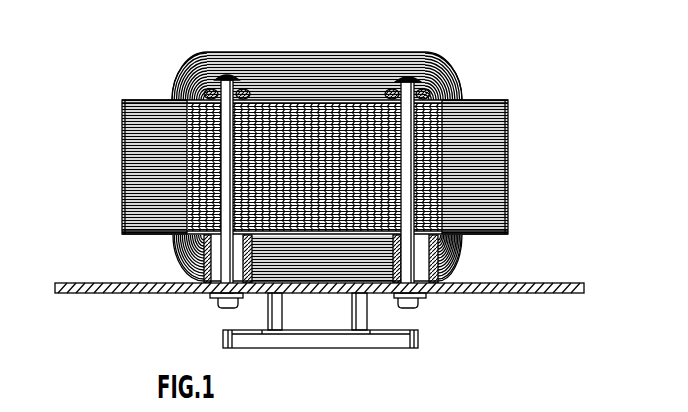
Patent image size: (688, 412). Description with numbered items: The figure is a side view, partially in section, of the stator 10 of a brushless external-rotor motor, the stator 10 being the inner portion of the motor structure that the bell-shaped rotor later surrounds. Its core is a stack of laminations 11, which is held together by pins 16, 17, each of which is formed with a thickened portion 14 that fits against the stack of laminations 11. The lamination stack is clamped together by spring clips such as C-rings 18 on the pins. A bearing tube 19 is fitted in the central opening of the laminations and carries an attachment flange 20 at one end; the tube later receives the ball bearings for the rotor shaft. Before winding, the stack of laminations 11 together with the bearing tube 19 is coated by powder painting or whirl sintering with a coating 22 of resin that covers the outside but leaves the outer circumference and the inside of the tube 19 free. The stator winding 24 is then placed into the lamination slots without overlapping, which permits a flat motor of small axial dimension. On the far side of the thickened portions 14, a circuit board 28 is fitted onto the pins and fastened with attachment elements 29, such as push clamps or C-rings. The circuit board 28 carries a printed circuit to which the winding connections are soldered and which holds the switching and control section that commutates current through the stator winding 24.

The stator 10 is at (98, 158).
The stack of laminations 11 is at (486, 164).
The thickened portion 14 is at (222, 271).
The pin 16 is at (232, 79).
The pin 17 is at (407, 78).
The C-ring 18 is at (181, 84).
The bearing tube 19 is at (349, 313).
The attachment flange 20 is at (416, 344).
The coating of resin 22 is at (488, 98).
The stator winding 24 is at (311, 68).
The circuit board 28 is at (496, 289).
The attachment element 29 is at (216, 299).